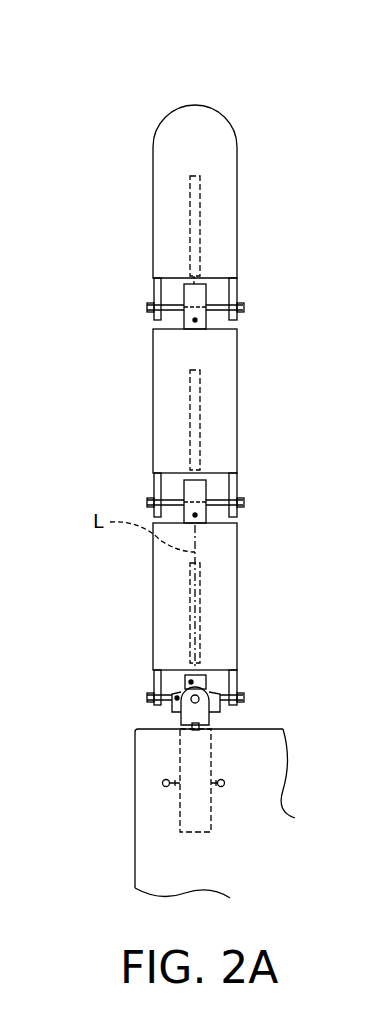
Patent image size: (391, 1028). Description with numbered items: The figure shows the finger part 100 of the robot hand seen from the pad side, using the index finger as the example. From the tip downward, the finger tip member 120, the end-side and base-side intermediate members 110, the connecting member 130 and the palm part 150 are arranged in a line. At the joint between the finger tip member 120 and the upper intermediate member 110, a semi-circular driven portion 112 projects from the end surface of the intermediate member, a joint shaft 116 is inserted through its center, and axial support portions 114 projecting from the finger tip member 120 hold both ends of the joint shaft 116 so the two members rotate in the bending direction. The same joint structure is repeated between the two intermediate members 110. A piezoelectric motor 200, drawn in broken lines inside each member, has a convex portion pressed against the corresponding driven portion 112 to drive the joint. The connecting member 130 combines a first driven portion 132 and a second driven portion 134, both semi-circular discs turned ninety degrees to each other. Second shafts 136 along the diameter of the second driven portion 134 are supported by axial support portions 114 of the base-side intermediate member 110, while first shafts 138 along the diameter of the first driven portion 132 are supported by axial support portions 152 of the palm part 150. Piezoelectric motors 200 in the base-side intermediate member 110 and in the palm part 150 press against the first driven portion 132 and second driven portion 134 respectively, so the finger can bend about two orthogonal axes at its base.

The finger part 100 is at (228, 80).
The finger tip member 120 is at (238, 173).
The piezoelectric motor 200 is at (200, 223).
The axial support portions 114 is at (152, 288).
The joint shaft 116 is at (206, 296).
The driven portion 112 is at (196, 322).
The intermediate member 110 is at (238, 378).
The connecting member 130 is at (80, 650).
The first driven portion 132 is at (190, 682).
The second driven portion 134 is at (176, 698).
The second shafts 136 is at (173, 712).
The first shafts 138 is at (192, 728).
The axial support portions 152 is at (209, 720).
The palm part 150 is at (135, 795).